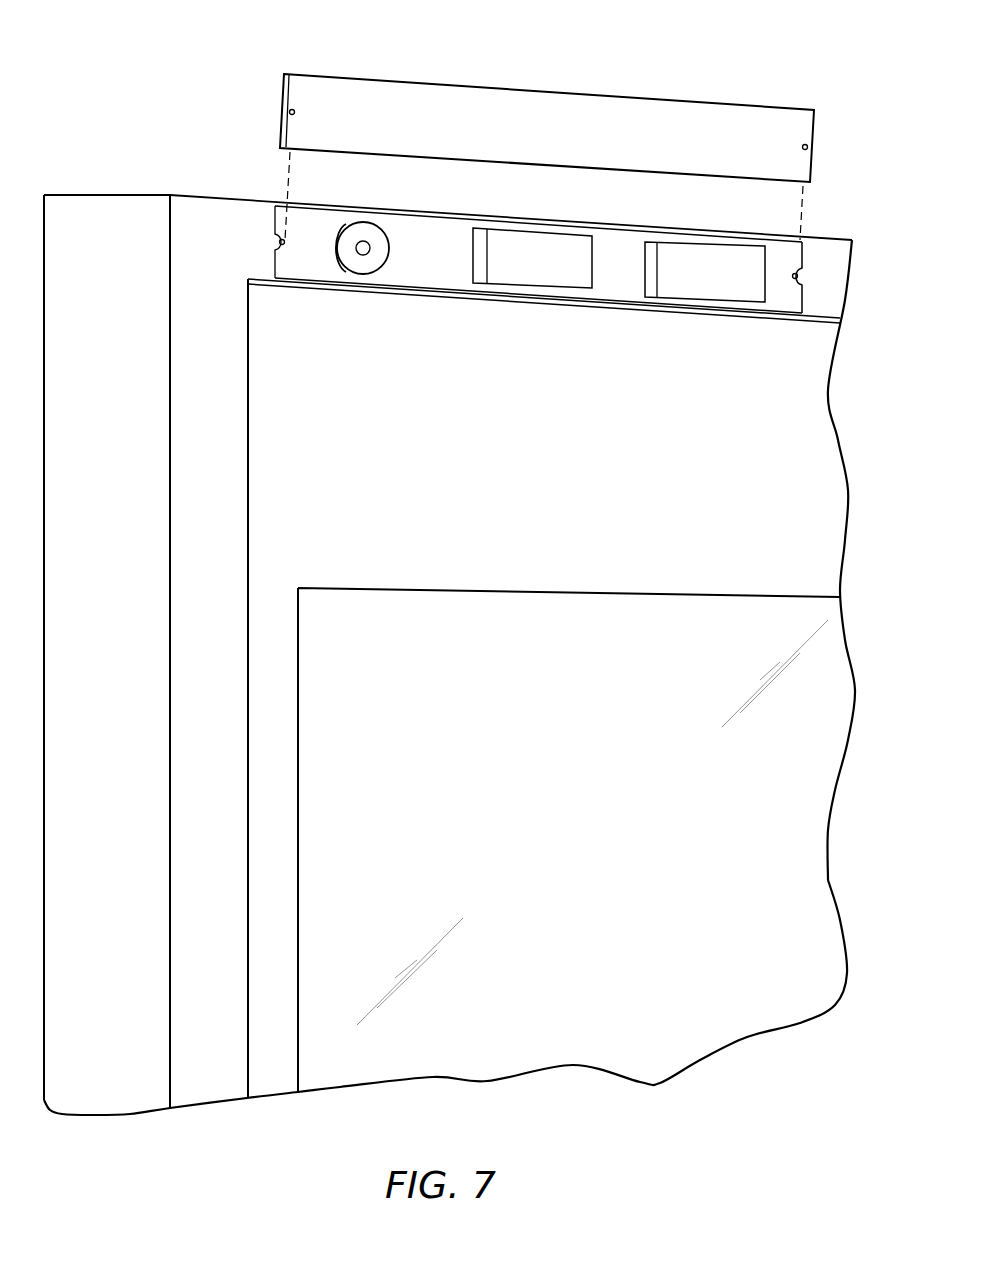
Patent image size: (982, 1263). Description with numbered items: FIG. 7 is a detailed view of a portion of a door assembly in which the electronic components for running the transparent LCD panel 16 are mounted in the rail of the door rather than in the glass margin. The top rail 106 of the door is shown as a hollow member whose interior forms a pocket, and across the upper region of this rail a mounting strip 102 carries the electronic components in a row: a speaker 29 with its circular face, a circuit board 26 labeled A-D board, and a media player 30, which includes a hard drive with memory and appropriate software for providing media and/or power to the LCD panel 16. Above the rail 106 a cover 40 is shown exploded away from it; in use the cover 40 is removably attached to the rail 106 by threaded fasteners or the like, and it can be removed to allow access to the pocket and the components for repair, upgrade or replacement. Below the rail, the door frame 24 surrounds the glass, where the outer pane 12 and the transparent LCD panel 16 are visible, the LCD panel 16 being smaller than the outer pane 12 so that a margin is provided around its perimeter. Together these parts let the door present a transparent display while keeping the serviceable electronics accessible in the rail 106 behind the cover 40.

The outer pane 12 is at (506, 1025).
The transparent LCD panel 16 is at (805, 782).
The frame panel 24 is at (752, 492).
The circuit board 26 is at (443, 266).
The speaker 29 is at (357, 266).
The media player 30 is at (692, 290).
The cover 40 is at (622, 112).
The mounting strip 102 is at (823, 250).
The rail 106 is at (187, 932).